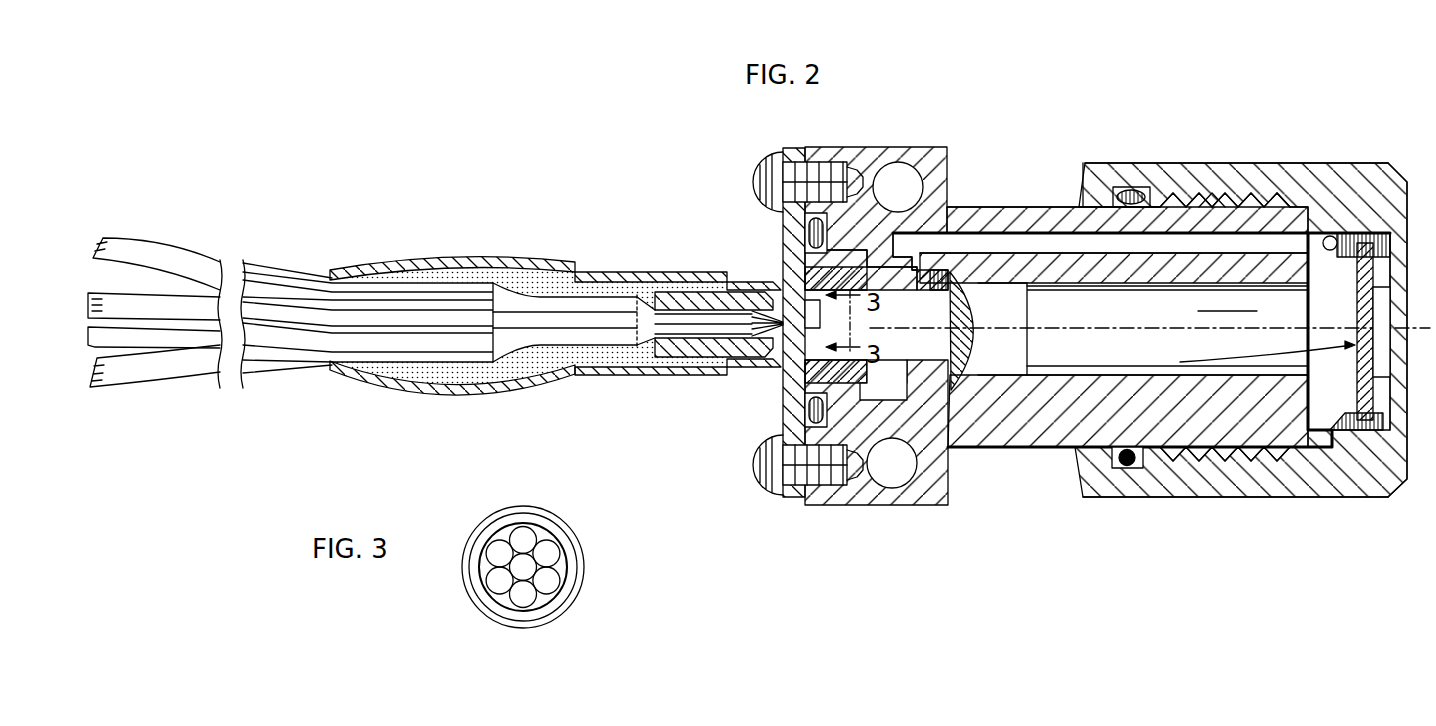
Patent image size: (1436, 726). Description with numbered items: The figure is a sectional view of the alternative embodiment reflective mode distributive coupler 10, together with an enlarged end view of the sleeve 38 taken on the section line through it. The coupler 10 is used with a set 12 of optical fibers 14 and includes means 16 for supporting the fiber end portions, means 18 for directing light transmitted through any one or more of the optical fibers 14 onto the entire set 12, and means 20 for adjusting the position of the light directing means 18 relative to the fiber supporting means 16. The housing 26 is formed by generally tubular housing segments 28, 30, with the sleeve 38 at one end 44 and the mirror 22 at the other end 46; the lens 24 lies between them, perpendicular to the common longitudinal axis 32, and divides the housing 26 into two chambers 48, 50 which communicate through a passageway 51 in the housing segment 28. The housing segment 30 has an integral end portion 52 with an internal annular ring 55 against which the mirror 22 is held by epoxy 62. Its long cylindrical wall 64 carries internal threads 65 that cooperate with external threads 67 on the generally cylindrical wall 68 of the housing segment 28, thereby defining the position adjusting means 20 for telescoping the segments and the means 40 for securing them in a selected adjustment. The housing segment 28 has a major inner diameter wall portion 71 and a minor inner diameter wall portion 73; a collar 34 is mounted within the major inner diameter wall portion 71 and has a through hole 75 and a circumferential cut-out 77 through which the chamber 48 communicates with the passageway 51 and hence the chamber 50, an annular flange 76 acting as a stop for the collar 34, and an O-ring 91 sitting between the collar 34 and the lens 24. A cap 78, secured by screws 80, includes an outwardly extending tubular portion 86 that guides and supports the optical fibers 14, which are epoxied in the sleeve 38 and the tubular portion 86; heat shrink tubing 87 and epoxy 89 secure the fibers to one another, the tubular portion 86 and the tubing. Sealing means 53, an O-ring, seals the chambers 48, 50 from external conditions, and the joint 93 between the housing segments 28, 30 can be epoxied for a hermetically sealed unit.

In FIG. 2, the distributive coupler 10 is at (1035, 120).
In FIG. 2, the set of optical fibers 12 is at (294, 268).
In FIG. 3, the set of optical fibers 12 is at (492, 604).
In FIG. 2, the optical fibers 14 is at (157, 308).
In FIG. 3, the optical fibers 14 is at (547, 553).
In FIG. 2, the fiber supporting means 16 is at (677, 378).
In FIG. 2, the light directing means 18 is at (1230, 378).
In FIG. 2, the position adjusting means 20 is at (1195, 203).
In FIG. 2, the mirror 22 is at (1357, 301).
In FIG. 2, the lens 24 is at (1157, 303).
In FIG. 2, the housing 26 is at (1102, 157).
In FIG. 2, the housing segment 28 is at (923, 506).
In FIG. 2, the housing segment 30 is at (1187, 484).
In FIG. 2, the common longitudinal axis 32 is at (1197, 331).
In FIG. 2, the collar 34 is at (837, 268).
In FIG. 2, the sleeve 38 is at (821, 318).
In FIG. 3, the sleeve 38 is at (552, 610).
In FIG. 2, the securing means 40 is at (1292, 190).
In FIG. 2, the end of housing 44 is at (783, 254).
In FIG. 2, the other end of housing 46 is at (1408, 190).
In FIG. 2, the chamber 48 is at (782, 374).
In FIG. 2, the chamber 50 is at (1215, 352).
In FIG. 2, the passageway 51 is at (990, 225).
In FIG. 2, the integral end portion 52 is at (1403, 307).
In FIG. 2, the sealing means 53 is at (1133, 187).
In FIG. 2, the internal annular ring 55 is at (1380, 395).
In FIG. 2, the epoxy 62 is at (1333, 233).
In FIG. 2, the long cylindrical wall 64 is at (1213, 163).
In FIG. 2, the internal threads 65 is at (1263, 195).
In FIG. 2, the external threads 67 is at (1222, 203).
In FIG. 2, the generally cylindrical wall 68 is at (1043, 223).
In FIG. 2, the major inner diameter wall portion 71 is at (840, 486).
In FIG. 2, the minor inner diameter wall portion 73 is at (1053, 377).
In FIG. 2, the through hole 75 is at (897, 367).
In FIG. 2, the annular flange 76 is at (995, 355).
In FIG. 2, the circumferential cut-out 77 is at (905, 262).
In FIG. 2, the cap 78 is at (781, 487).
In FIG. 2, the screws 80 is at (753, 483).
In FIG. 2, the tubular portion 86 is at (673, 298).
In FIG. 2, the heat shrink tubing 87 is at (437, 258).
In FIG. 2, the epoxy 89 is at (551, 275).
In FIG. 2, the O-ring 91 is at (950, 272).
In FIG. 2, the joint 93 is at (1074, 470).